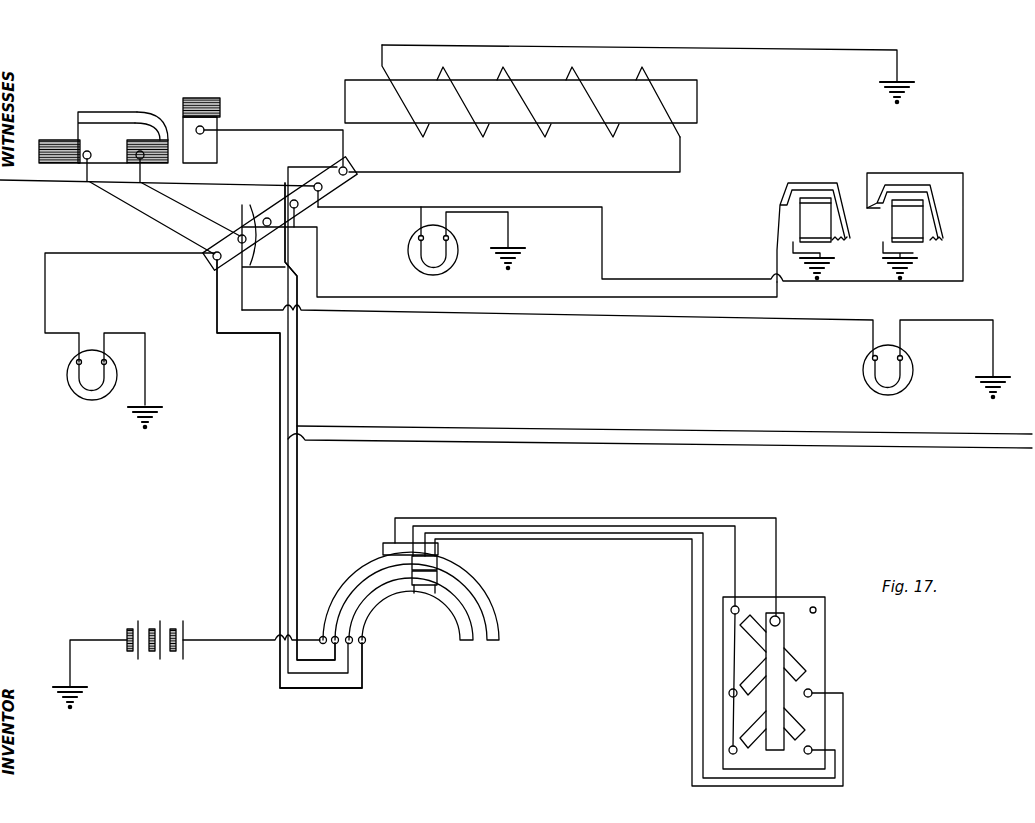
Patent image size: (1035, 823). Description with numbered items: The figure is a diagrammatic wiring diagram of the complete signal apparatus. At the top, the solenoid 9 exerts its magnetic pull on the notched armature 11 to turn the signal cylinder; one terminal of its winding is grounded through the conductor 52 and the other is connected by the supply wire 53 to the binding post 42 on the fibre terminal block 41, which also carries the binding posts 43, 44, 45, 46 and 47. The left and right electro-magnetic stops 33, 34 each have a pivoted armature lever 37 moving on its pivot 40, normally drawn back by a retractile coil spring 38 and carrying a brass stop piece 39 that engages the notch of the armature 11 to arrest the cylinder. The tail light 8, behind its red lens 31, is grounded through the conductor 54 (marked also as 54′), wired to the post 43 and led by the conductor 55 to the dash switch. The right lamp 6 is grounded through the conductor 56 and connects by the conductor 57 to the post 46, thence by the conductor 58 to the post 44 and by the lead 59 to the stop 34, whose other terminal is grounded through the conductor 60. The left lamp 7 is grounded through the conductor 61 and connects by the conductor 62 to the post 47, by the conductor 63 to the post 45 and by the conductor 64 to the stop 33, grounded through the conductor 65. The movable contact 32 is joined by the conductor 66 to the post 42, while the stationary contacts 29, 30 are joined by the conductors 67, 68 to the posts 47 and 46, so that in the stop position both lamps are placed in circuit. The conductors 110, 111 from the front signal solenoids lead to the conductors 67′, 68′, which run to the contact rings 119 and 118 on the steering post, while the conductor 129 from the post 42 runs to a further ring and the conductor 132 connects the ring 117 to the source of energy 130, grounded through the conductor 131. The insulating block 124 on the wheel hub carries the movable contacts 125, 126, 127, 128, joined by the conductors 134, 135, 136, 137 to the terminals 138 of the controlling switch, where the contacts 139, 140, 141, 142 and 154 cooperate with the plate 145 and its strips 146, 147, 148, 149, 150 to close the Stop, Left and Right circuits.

The right lamp 6 is at (870, 372).
The left lamp 7 is at (95, 378).
The tail light 8 is at (450, 258).
The solenoid 9 is at (607, 133).
The armature 11 is at (698, 107).
The stationary contact 29 is at (123, 147).
The stationary contact 30 is at (140, 118).
The red tail light lens 31 is at (55, 140).
The movable contact 32 is at (222, 108).
The left electro-magnetic stop 33 is at (809, 178).
The right electro-magnetic stop 34 is at (913, 181).
The armature lever 37 is at (844, 222).
The retractile coil spring 38 is at (841, 250).
The stop piece 39 is at (780, 205).
The pivot 40 is at (838, 183).
The terminal block 41 is at (335, 157).
The binding post 42 is at (348, 169).
The binding post 43 is at (324, 187).
The binding post 44 is at (293, 200).
The binding post 45 is at (265, 218).
The binding post 46 is at (259, 262).
The binding post 47 is at (213, 261).
The conductor 52 is at (648, 70).
The conductor 53 is at (646, 173).
The conductor 54 is at (512, 232).
The conductor 54′ is at (402, 209).
The conductor 55 is at (63, 185).
The conductor 56 is at (955, 322).
The conductor 57 is at (733, 320).
The conductor 58 is at (240, 215).
The conductor 59 is at (470, 209).
The conductor 60 is at (918, 256).
The conductor 61 is at (148, 375).
The conductor 62 is at (47, 292).
The conductor 63 is at (272, 252).
The conductor 64 is at (447, 316).
The conductor 65 is at (793, 252).
The conductor 66 is at (288, 130).
The conductor 67 is at (143, 210).
The conductor 68 is at (191, 209).
The conductor 67′ is at (272, 334).
The conductor 68′ is at (300, 349).
The conductor 110 is at (705, 445).
The conductor 111 is at (686, 428).
The contact ring 117 is at (500, 627).
The contact ring 118 is at (500, 641).
The contact ring 119 is at (467, 627).
The insulating block 124 is at (385, 550).
The movable contact 125 is at (400, 553).
The movable contact 126 is at (364, 633).
The movable contact 127 is at (437, 568).
The movable contact 128 is at (437, 583).
The conductor 129 is at (280, 549).
The source of energy 130 is at (160, 621).
The conductor 131 is at (90, 655).
The conductor 132 is at (238, 640).
The conductor 134 is at (497, 518).
The conductor 135 is at (546, 526).
The conductor 136 is at (602, 533).
The conductor 137 is at (695, 541).
The binding posts or terminals 138 is at (780, 670).
The post 139 is at (731, 607).
The post 140 is at (729, 693).
The post 141 is at (729, 750).
The post 142 is at (814, 750).
The plate 145 is at (853, 675).
The movable contact strip 146 is at (792, 736).
The movable contact strip 147 is at (756, 741).
The contact strip 148 is at (745, 630).
The contact strip 149 is at (742, 682).
The contact strip 150 is at (800, 662).
The contact 154 is at (817, 610).